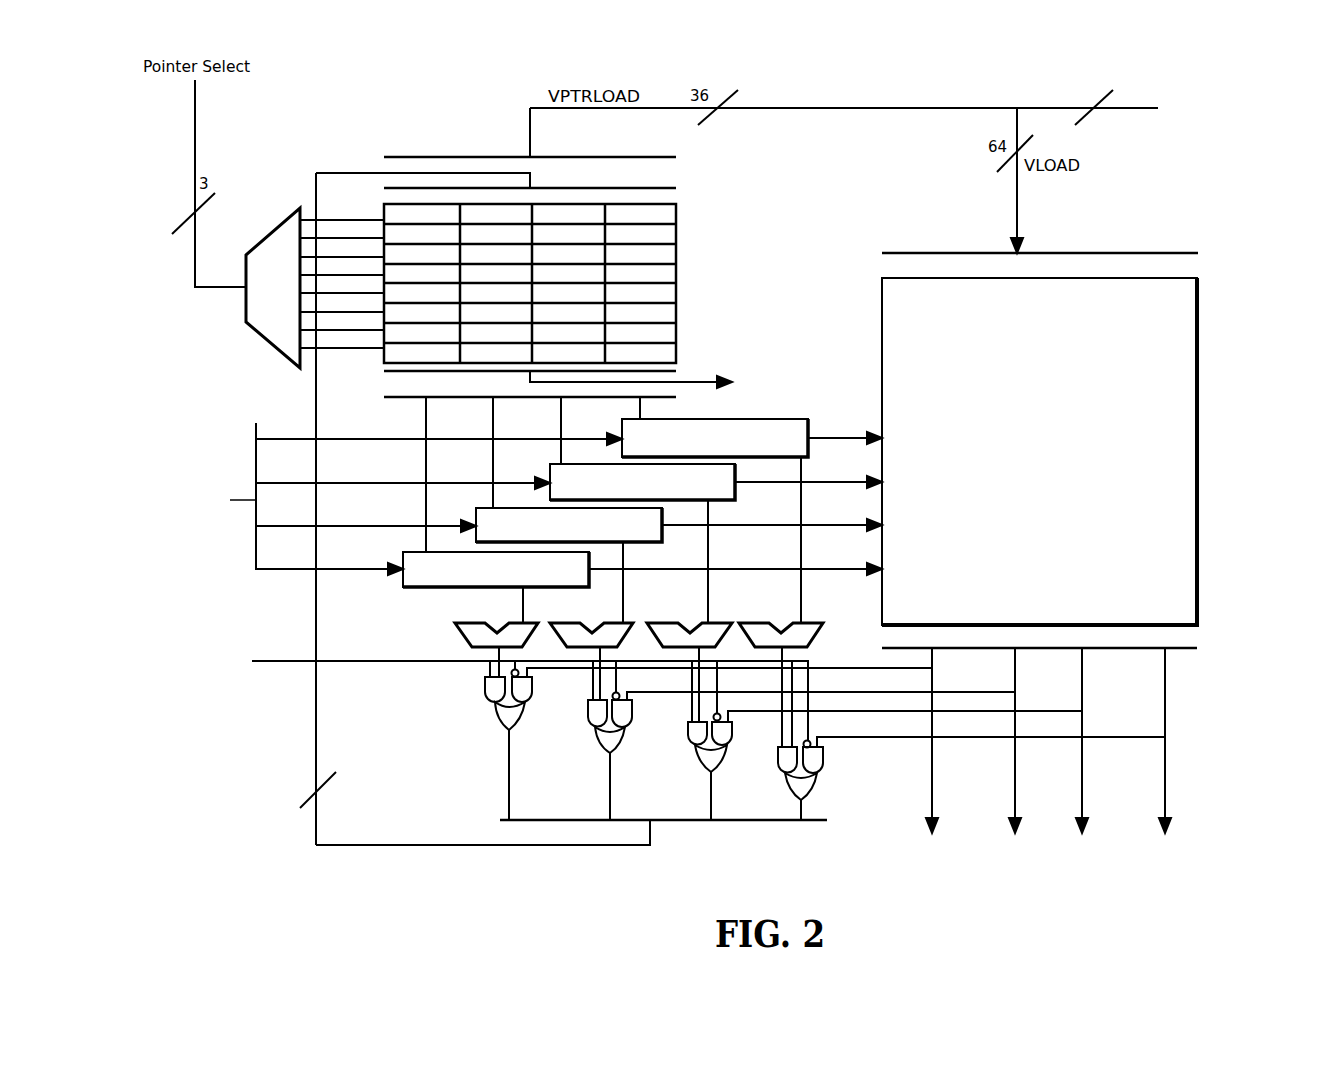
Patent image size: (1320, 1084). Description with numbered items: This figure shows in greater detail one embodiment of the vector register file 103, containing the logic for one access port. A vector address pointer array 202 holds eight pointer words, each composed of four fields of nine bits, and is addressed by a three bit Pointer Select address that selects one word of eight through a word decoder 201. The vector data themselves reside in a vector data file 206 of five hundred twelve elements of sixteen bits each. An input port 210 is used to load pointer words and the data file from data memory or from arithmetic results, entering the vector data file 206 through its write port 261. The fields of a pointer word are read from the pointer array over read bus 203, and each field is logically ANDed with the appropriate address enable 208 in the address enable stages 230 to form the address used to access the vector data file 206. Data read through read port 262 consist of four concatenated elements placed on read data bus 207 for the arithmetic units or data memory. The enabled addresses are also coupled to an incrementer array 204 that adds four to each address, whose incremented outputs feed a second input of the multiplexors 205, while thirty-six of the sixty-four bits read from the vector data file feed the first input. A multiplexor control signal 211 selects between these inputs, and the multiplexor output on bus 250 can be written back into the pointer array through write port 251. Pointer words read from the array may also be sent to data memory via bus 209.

The vector register file 103 is at (306, 884).
The word decoder 201 is at (250, 328).
The vector address pointer array 202 is at (676, 272).
The read bus 203 is at (390, 399).
The increment-by-4 array 204 is at (422, 632).
The multiplexors 205 is at (590, 742).
The vector data file 206 is at (1060, 549).
The read data bus 207 is at (1194, 860).
The address enables 208 is at (230, 504).
The bus 209 is at (700, 380).
The input port 210 is at (1140, 108).
The multiplexor control signal 211 is at (262, 662).
The address enable stages 230 is at (737, 475).
The bus 250 is at (430, 848).
The write port 251 is at (383, 188).
The write port 261 is at (1183, 253).
The read port 262 is at (1190, 648).